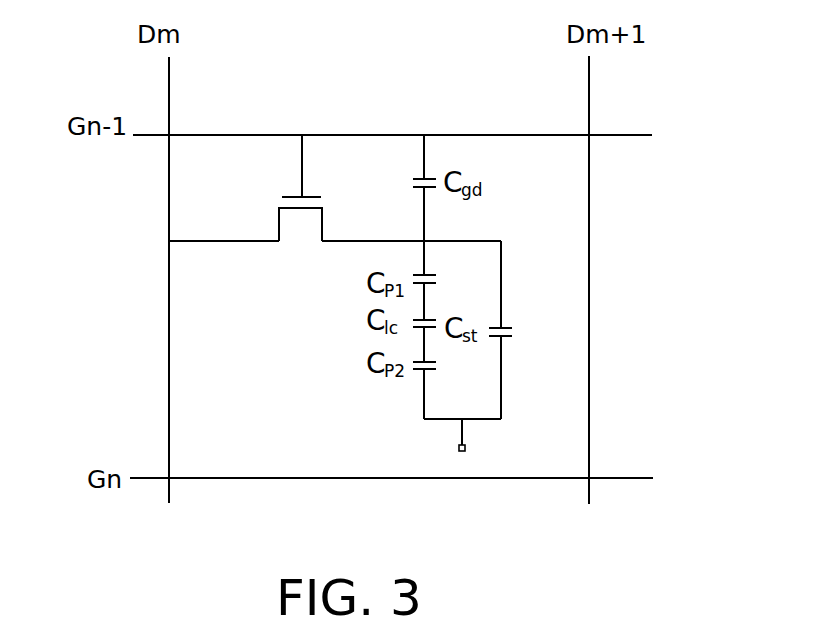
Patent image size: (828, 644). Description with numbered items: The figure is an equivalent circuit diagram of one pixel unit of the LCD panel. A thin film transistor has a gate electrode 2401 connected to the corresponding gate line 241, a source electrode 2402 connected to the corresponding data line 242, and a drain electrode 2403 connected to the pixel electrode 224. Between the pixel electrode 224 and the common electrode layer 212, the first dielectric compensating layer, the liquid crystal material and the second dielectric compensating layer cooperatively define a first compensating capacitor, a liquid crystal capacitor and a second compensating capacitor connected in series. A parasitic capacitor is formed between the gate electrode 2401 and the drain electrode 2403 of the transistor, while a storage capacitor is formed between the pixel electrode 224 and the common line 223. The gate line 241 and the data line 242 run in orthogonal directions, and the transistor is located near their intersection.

The gate electrode 2401 is at (302, 170).
The source electrode 2402 is at (249, 241).
The drain electrode 2403 is at (358, 237).
The pixel electrode 224 is at (418, 273).
The common line 223 is at (507, 338).
The common electrode layer 212 is at (412, 377).
The gate line 241 is at (610, 135).
The data line 242 is at (589, 88).